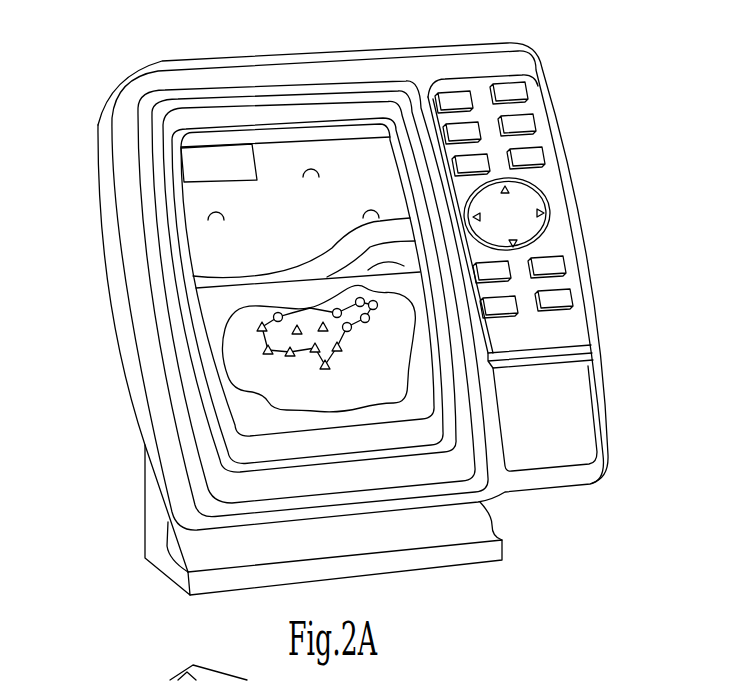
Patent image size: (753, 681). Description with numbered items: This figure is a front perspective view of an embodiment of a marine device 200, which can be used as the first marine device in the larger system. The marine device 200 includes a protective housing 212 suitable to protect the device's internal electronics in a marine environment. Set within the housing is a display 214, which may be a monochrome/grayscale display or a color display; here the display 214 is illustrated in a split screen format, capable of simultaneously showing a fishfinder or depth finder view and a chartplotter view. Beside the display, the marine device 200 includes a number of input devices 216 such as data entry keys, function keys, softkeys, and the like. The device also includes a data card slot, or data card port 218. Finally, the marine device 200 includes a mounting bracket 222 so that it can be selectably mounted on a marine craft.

The marine device 200 is at (363, 322).
The protective housing 212 is at (531, 52).
The display 214 is at (200, 243).
The input devices 216 is at (548, 70).
The data card port 218 is at (563, 493).
The mounting bracket 222 is at (443, 573).